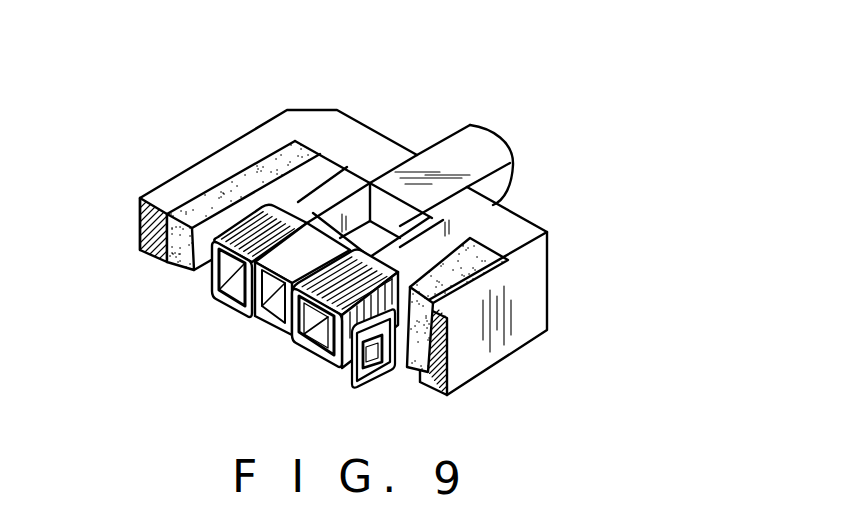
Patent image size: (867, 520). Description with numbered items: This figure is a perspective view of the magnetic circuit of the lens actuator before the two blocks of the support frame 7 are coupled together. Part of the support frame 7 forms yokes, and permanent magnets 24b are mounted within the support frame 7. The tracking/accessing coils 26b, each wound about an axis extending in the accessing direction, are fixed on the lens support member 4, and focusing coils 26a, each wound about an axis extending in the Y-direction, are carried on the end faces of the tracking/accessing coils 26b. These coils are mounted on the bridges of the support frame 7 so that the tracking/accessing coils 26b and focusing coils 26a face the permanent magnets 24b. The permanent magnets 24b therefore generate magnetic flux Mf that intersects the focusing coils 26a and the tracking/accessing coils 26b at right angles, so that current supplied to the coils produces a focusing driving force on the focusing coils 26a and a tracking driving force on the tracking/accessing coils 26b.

The support frame 7 is at (441, 148).
The magnetic flux Mf is at (285, 190).
The permanent magnets 24b is at (482, 258).
The lens support member 4 is at (272, 331).
The tracking/accessing coils 26b is at (305, 310).
The focusing coils 26a is at (374, 386).